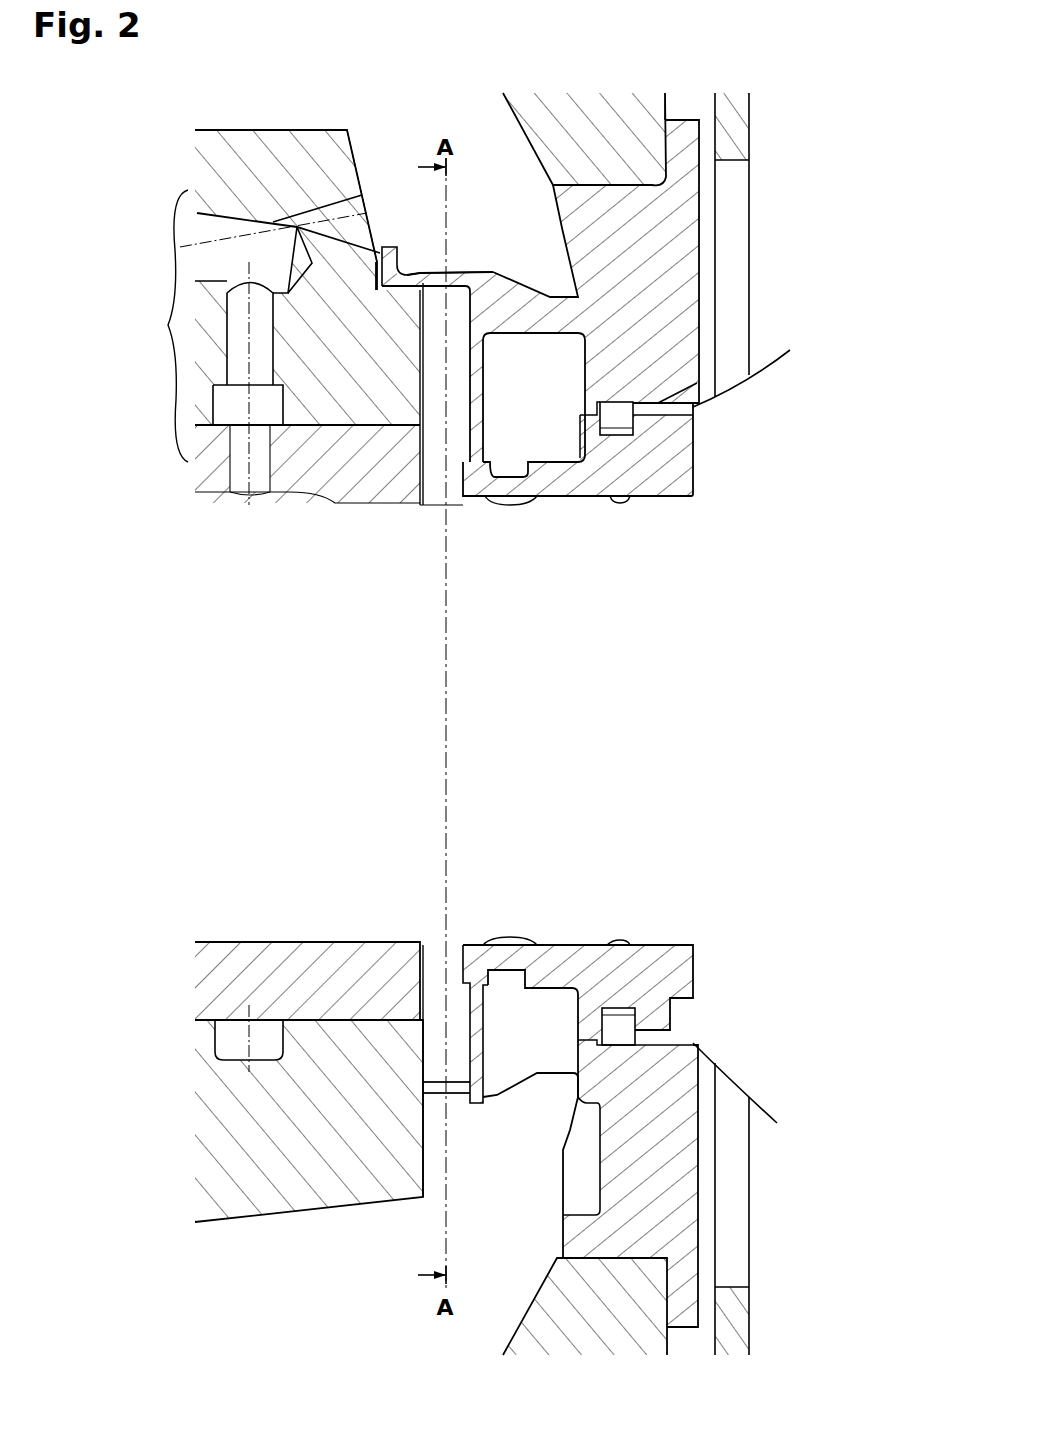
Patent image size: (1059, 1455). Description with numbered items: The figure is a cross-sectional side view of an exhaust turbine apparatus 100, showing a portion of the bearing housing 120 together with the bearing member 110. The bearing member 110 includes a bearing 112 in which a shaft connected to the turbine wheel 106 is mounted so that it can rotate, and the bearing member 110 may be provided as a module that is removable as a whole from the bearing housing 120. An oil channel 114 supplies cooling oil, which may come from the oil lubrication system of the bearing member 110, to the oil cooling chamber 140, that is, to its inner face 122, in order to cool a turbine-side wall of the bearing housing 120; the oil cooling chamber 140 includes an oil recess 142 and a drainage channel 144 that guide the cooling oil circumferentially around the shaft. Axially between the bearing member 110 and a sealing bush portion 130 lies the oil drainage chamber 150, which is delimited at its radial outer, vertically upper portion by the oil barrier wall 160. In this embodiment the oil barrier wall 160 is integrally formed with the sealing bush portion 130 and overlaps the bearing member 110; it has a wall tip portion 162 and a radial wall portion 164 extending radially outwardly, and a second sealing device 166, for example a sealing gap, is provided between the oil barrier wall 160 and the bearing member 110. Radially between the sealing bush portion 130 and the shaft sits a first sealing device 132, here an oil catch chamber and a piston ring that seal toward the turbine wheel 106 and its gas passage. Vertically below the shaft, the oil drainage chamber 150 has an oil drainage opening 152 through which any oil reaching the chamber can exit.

The exhaust turbine apparatus 100 is at (603, 75).
The turbine wheel 106 is at (763, 420).
The bearing member 110 is at (151, 326).
The bearing 112 is at (320, 481).
The oil channel 114 is at (350, 204).
The bearing housing 120 is at (684, 99).
The inner face 122 is at (528, 140).
The sealing bush portion 130 is at (623, 228).
The first sealing device 132 is at (612, 380).
The oil cooling chamber 140 is at (400, 132).
The oil recess 142 is at (553, 283).
The drainage channel 144 is at (560, 297).
The oil drainage chamber 150 is at (457, 341).
The oil drainage opening 152 is at (463, 1060).
The oil barrier wall 160 is at (431, 245).
The wall tip portion 162 is at (370, 290).
The radial wall portion 164 is at (378, 253).
The second sealing device 166 is at (366, 272).